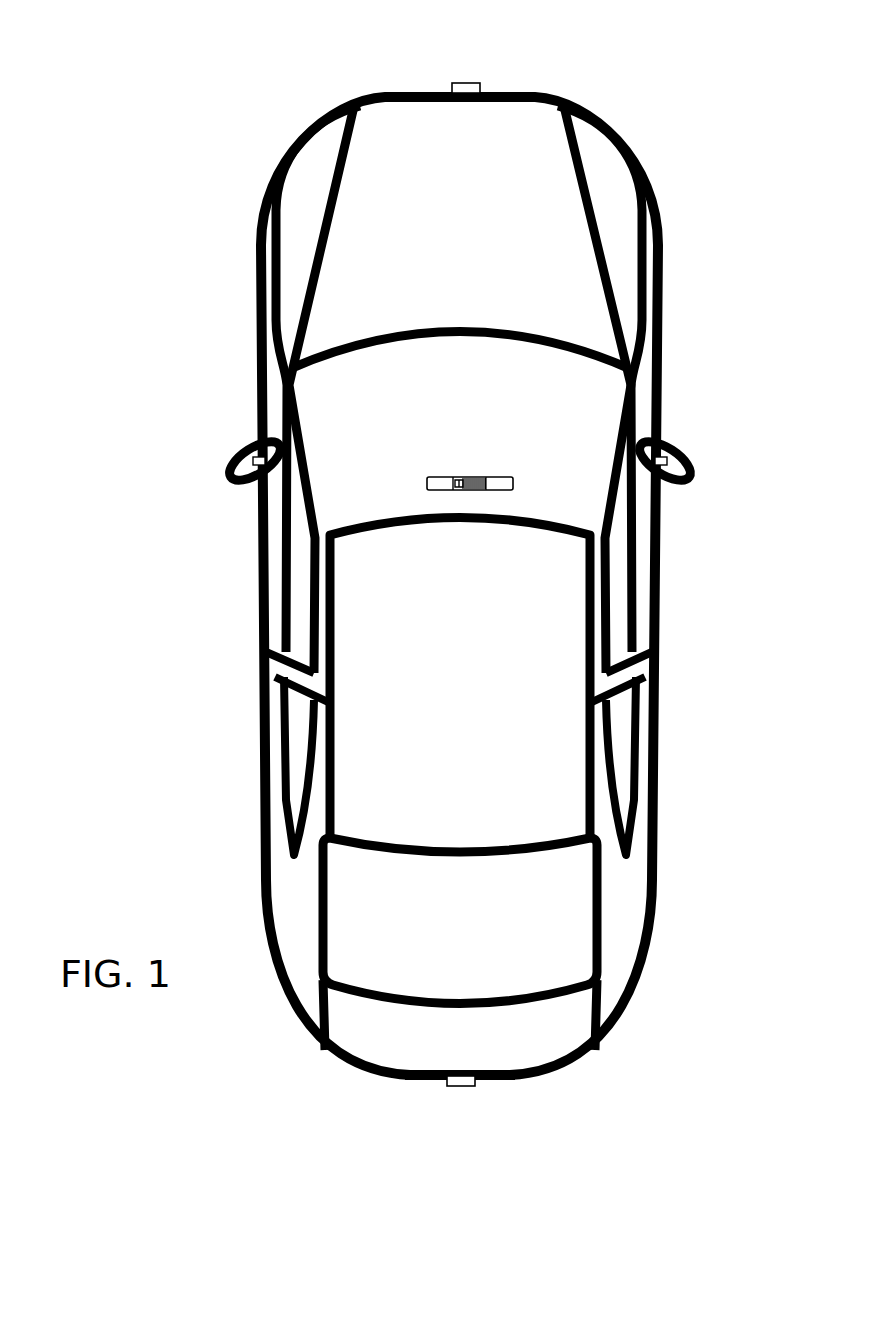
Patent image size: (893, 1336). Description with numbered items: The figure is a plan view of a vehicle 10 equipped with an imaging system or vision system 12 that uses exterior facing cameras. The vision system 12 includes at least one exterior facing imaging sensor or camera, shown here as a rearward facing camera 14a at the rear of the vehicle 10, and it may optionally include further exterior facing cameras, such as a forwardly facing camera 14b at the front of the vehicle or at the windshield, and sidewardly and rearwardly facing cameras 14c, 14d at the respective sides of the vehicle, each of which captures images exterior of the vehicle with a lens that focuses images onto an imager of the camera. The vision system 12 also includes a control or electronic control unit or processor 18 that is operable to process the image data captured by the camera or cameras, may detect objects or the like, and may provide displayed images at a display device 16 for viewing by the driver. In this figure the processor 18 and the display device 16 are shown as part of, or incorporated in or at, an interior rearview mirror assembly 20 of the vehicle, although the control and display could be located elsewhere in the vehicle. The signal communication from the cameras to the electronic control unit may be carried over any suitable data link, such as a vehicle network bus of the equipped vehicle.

The vehicle 10 is at (200, 179).
The vision system 12 is at (398, 1114).
The rearward facing camera 14a is at (463, 1082).
The forwardly facing camera 14b is at (470, 82).
The sidewardly/rearwardly facing camera 14c is at (255, 460).
The sidewardly/rearwardly facing camera 14d is at (662, 462).
The display device 16 is at (443, 481).
The processor 18 is at (467, 477).
The interior rearview mirror assembly 20 is at (512, 478).